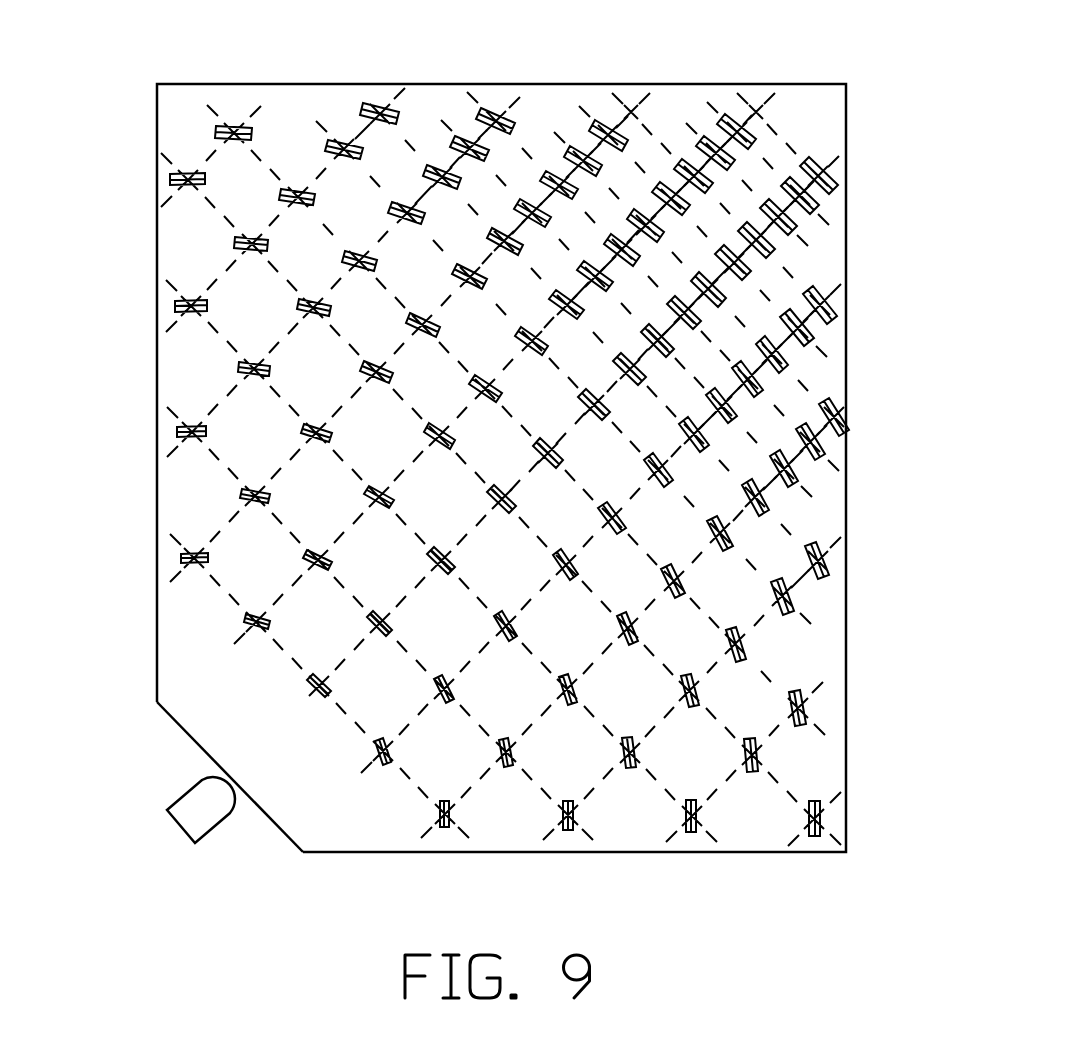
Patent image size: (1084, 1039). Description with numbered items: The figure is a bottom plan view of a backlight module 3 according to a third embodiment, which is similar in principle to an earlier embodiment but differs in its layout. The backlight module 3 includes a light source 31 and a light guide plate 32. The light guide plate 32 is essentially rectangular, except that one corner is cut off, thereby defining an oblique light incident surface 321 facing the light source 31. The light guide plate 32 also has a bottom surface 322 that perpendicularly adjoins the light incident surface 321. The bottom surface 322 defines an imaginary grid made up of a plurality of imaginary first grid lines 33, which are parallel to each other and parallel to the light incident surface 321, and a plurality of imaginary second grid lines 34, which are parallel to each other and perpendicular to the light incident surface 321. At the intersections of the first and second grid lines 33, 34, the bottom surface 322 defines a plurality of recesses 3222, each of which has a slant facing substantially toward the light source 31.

The backlight module 3 is at (489, 46).
The light source 31 is at (188, 812).
The light guide plate 32 is at (863, 347).
The light incident surface 321 is at (187, 733).
The bottom surface 322 is at (837, 252).
The recess 3222 is at (828, 182).
The first grid lines 33 is at (402, 775).
The second grid lines 34 is at (290, 708).